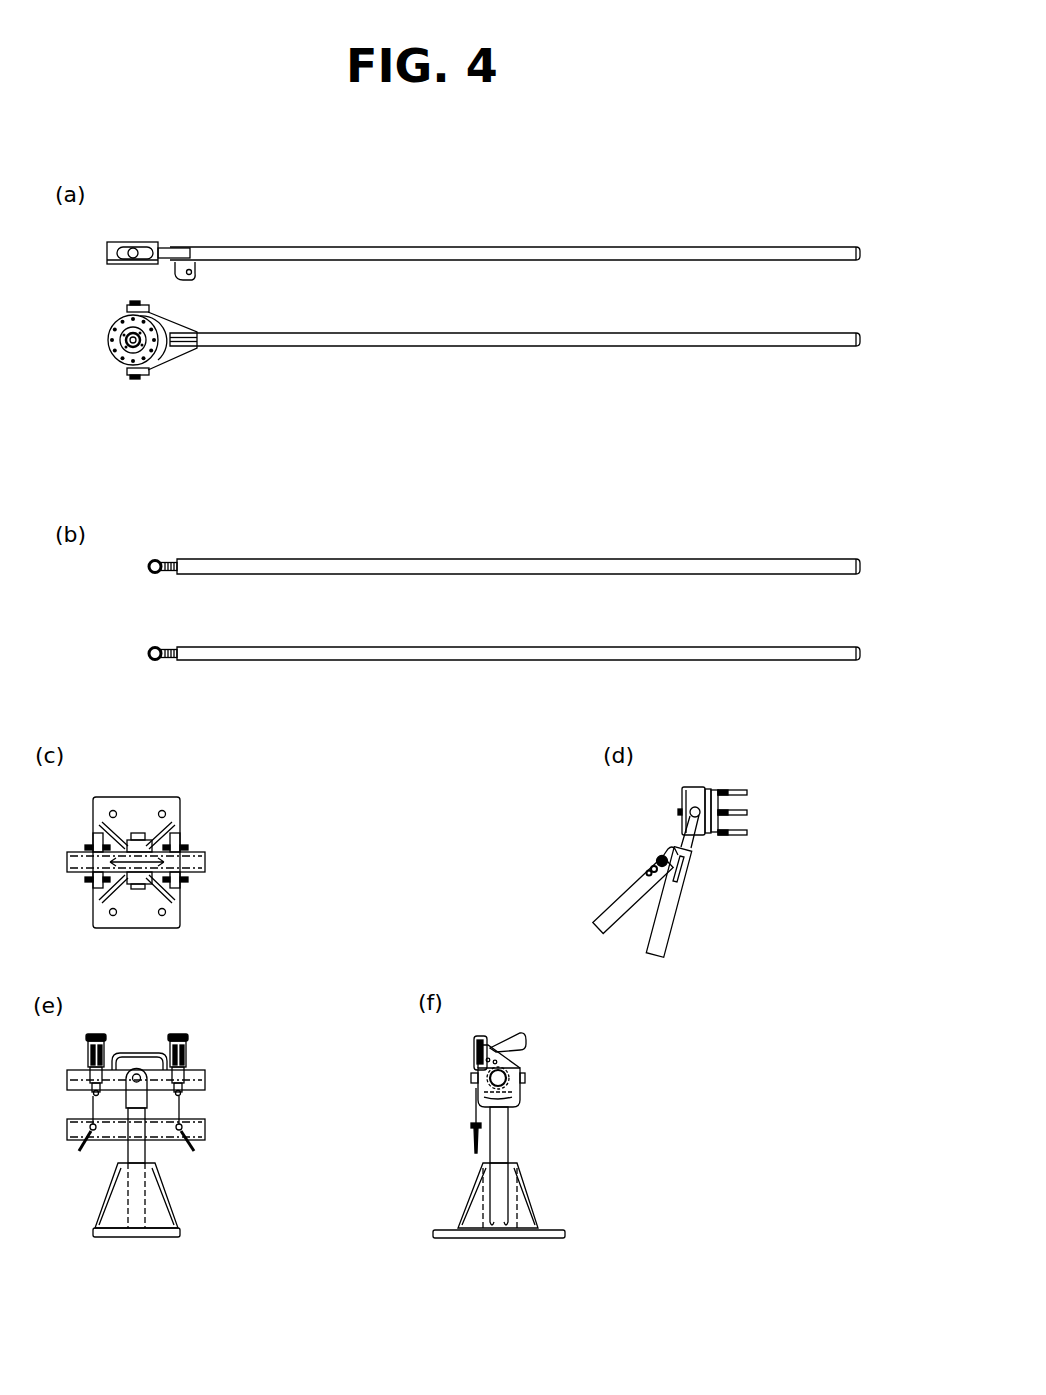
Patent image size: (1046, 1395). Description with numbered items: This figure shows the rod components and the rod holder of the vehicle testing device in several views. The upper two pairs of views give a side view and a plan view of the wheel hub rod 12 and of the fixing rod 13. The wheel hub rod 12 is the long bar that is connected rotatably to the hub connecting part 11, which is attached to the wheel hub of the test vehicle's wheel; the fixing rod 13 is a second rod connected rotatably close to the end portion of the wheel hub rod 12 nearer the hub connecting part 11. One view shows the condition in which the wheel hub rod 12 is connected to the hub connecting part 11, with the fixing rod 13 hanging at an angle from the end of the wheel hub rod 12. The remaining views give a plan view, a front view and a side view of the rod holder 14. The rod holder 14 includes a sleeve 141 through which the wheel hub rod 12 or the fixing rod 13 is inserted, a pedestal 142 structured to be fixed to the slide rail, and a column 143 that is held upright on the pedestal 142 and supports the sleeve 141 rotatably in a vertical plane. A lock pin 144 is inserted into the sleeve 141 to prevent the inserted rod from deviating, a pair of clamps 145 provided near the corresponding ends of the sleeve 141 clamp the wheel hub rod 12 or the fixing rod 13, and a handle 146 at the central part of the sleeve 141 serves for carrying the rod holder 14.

The hub connecting part 11 is at (92, 243).
The wheel hub rod 12 is at (545, 246).
The fixing rod 13 is at (583, 558).
The rod holder 14 is at (215, 831).
The sleeve 141 is at (195, 872).
The pedestal 142 is at (180, 913).
The column 143 is at (146, 1151).
The lock pin 144 is at (188, 1146).
The clamps 145 is at (93, 834).
The handle 146 is at (135, 860).